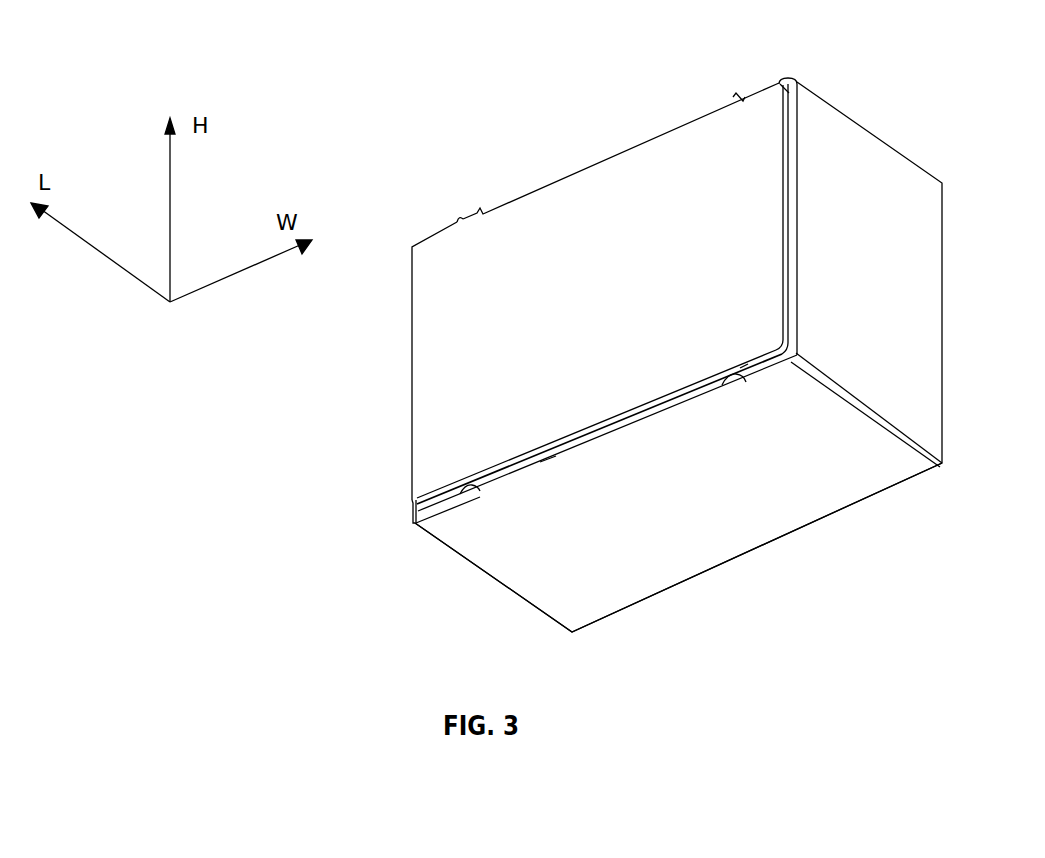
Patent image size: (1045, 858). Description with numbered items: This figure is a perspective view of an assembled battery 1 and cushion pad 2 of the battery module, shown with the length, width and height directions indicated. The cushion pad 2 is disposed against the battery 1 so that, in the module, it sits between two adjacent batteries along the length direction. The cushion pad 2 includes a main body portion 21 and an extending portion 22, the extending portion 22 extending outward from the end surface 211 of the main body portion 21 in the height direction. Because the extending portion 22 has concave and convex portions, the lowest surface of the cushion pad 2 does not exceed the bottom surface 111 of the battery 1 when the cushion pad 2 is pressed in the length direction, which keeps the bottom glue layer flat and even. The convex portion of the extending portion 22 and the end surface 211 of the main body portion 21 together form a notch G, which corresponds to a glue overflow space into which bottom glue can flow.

The battery 1 is at (826, 82).
The bottom surface 111 is at (523, 575).
The cushion pad 2 is at (572, 315).
The main body portion 21 is at (427, 286).
The end surface 211 is at (630, 418).
The extending portion 22 is at (717, 106).
The notch G is at (547, 460).